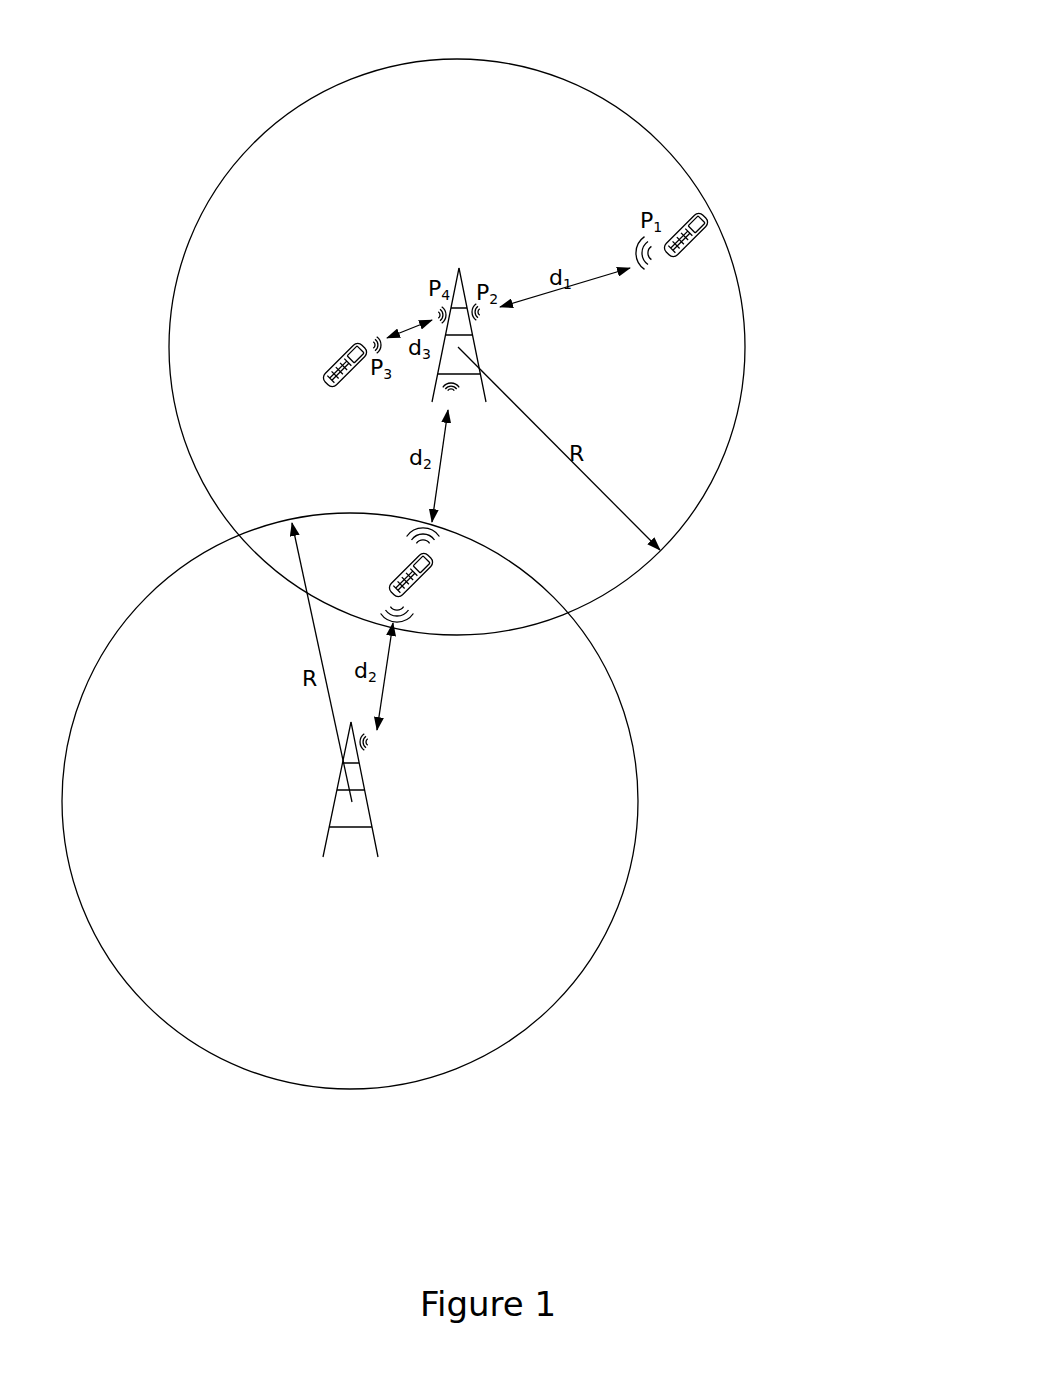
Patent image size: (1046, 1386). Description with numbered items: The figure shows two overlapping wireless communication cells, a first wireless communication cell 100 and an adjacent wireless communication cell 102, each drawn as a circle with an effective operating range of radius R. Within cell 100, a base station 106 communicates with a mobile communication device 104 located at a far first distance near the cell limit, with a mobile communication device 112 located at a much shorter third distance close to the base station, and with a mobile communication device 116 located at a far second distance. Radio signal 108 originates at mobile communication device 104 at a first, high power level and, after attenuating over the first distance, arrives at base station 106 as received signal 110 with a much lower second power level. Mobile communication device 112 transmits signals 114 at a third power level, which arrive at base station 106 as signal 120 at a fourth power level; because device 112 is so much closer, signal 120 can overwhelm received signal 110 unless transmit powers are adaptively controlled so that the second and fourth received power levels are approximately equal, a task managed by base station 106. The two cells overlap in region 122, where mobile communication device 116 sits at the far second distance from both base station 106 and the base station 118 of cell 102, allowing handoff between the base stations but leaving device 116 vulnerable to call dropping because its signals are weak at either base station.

The wireless communication cell 100 is at (627, 112).
The wireless communication cell 102 is at (628, 718).
The mobile communication device 104 is at (690, 257).
The base station 106 is at (458, 258).
The radio signal 108 is at (662, 278).
The received signal 110 is at (490, 325).
The mobile communication device 112 is at (325, 367).
The signals 114 is at (370, 337).
The mobile communication device 116 is at (432, 583).
The base station 118 is at (351, 862).
The signal 120 is at (431, 309).
The overlap region 122 is at (328, 552).